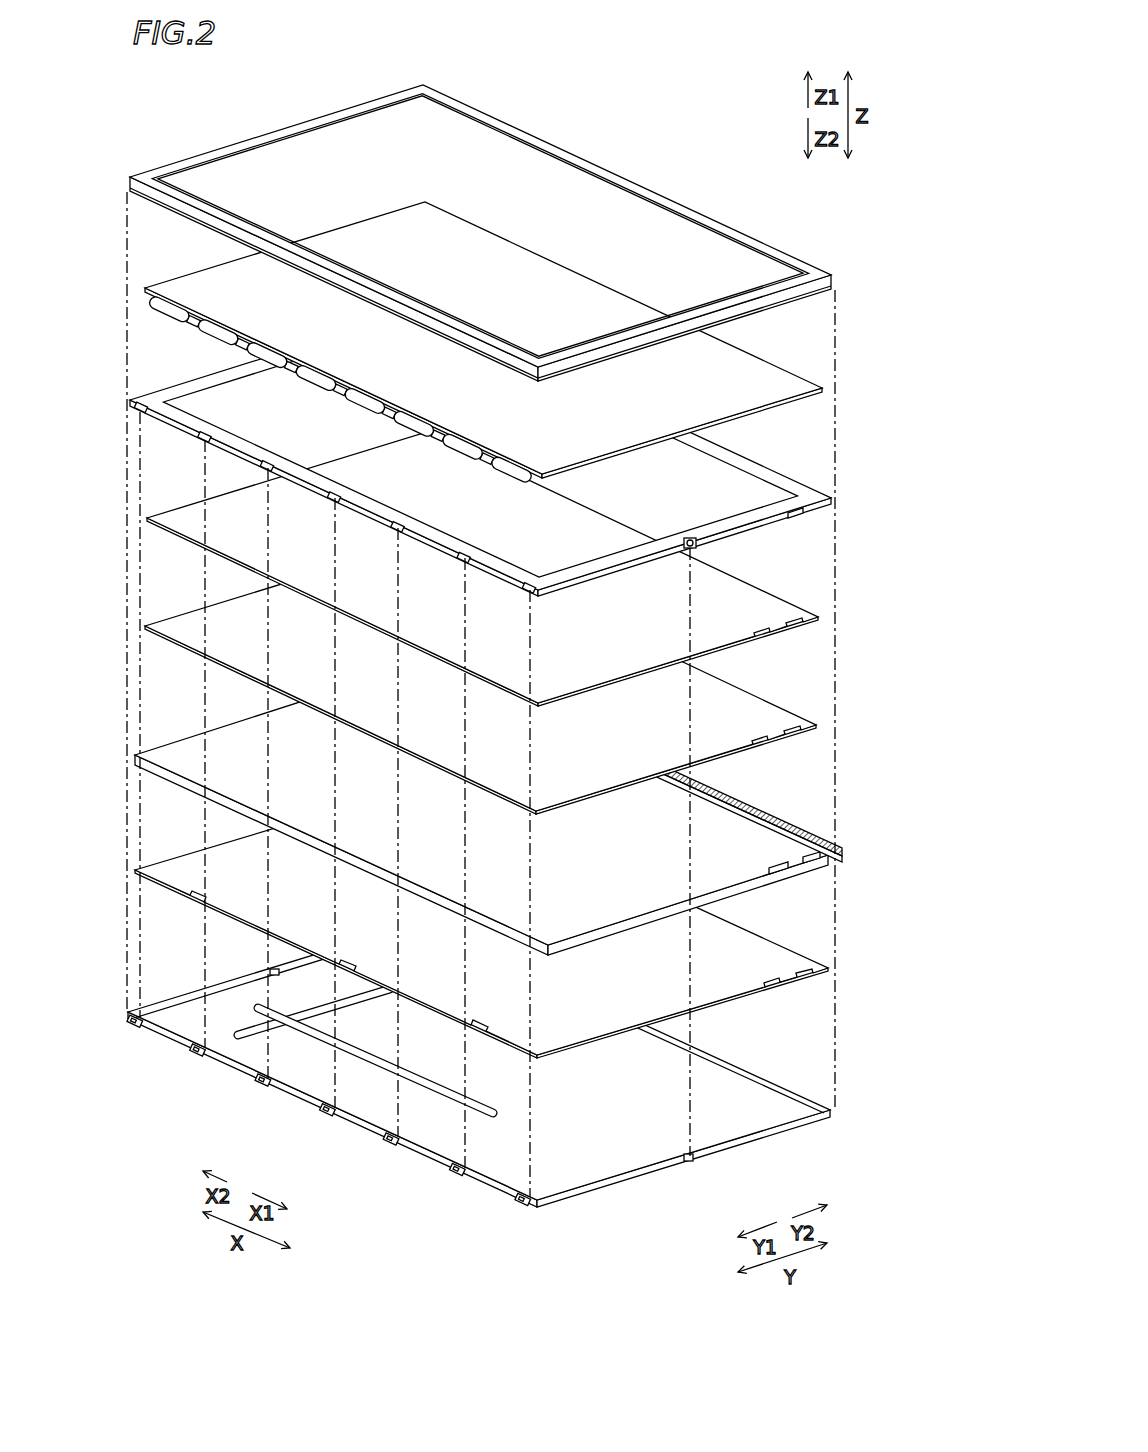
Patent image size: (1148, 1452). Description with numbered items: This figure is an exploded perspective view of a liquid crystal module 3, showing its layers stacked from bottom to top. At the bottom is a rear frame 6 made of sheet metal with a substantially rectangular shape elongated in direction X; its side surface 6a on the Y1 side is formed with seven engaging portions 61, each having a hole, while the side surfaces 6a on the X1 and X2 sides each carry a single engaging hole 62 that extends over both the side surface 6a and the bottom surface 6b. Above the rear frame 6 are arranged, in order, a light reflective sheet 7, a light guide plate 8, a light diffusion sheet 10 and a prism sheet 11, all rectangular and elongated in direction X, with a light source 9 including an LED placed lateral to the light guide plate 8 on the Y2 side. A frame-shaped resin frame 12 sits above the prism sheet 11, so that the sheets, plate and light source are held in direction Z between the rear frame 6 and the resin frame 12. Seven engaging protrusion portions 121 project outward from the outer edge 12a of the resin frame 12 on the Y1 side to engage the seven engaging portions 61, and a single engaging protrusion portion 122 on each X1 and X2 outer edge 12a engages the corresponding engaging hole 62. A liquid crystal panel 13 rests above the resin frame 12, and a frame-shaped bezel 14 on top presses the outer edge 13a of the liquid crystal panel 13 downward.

The liquid crystal module 3 is at (672, 82).
The rear frame 6 is at (464, 1091).
The side surface 6a is at (195, 988).
The bottom surface 6b is at (625, 1188).
The engaging portion 61 is at (136, 1024).
The engaging hole 62 is at (272, 972).
The light reflective sheet 7 is at (752, 960).
The light guide plate 8 is at (808, 866).
The light source 9 is at (770, 798).
The light diffusion sheet 10 is at (783, 720).
The prism sheet 11 is at (785, 608).
The resin frame 12 is at (480, 452).
The outer edge 12a is at (796, 515).
The engaging protrusion portion 121 is at (143, 404).
The engaging protrusion portion 122 is at (694, 538).
The liquid crystal panel 13 is at (511, 343).
The outer edge 13a is at (822, 392).
The bezel 14 is at (828, 272).